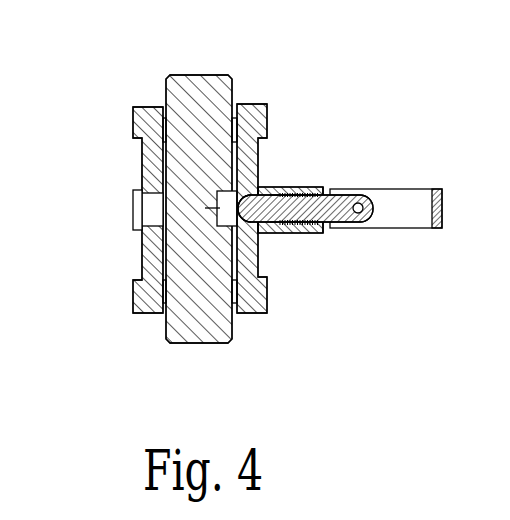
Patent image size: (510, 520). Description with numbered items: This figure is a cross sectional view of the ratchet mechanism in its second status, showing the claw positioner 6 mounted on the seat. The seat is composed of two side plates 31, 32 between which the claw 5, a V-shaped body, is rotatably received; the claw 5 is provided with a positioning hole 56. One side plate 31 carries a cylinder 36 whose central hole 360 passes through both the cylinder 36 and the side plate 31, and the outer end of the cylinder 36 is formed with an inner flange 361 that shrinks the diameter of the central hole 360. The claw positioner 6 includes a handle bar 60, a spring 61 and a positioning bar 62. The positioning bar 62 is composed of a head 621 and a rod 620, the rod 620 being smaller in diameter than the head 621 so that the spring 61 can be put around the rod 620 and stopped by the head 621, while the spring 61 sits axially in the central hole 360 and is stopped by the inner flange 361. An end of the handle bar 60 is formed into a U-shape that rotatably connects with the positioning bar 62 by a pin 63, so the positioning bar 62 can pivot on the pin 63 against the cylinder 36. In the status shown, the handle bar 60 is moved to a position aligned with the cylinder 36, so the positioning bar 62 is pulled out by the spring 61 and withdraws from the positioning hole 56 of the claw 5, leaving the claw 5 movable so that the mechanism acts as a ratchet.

The claw 5 is at (200, 80).
The side plate 32 is at (148, 108).
The side plate 31 is at (252, 107).
The cylinder 36 is at (314, 195).
The central hole 360 is at (238, 190).
The inner flange 361 is at (325, 230).
The positioning hole 56 is at (220, 208).
The claw positioner 6 is at (307, 234).
The handle bar 60 is at (398, 189).
The positioning bar 62 is at (277, 234).
The rod 620 is at (300, 222).
The head 621 is at (238, 208).
The spring 61 is at (303, 190).
The pin 63 is at (358, 214).